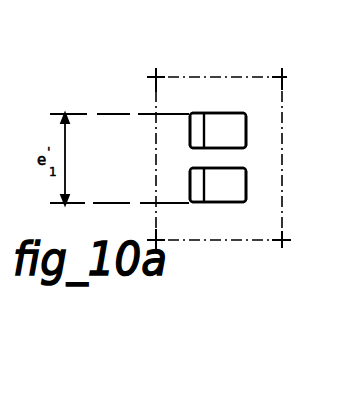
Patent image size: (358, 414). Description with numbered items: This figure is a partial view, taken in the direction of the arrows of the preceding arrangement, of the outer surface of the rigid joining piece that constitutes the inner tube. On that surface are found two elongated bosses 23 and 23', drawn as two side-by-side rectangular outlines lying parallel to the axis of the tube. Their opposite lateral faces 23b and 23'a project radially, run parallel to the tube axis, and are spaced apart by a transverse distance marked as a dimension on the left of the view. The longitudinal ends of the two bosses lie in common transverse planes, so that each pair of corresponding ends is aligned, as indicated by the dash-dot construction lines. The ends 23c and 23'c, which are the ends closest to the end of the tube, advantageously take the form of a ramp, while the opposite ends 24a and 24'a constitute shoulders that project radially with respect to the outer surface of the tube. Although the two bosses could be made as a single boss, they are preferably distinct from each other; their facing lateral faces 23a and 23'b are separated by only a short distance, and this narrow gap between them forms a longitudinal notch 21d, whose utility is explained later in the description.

The elongated boss 23 is at (202, 91).
The lateral face of boss 23a is at (231, 149).
The opposite lateral face of boss 23b is at (229, 113).
The ramp-shaped end of boss 23c is at (189, 130).
The shoulder end of boss 24a is at (250, 125).
The longitudinal notch 21d is at (238, 161).
The elongated boss 23' is at (248, 220).
The opposite lateral face of boss 23'a is at (219, 238).
The lateral face of boss 23'b is at (169, 155).
The ramp-shaped end of boss 23'c is at (141, 185).
The shoulder end of boss 24'a is at (289, 187).